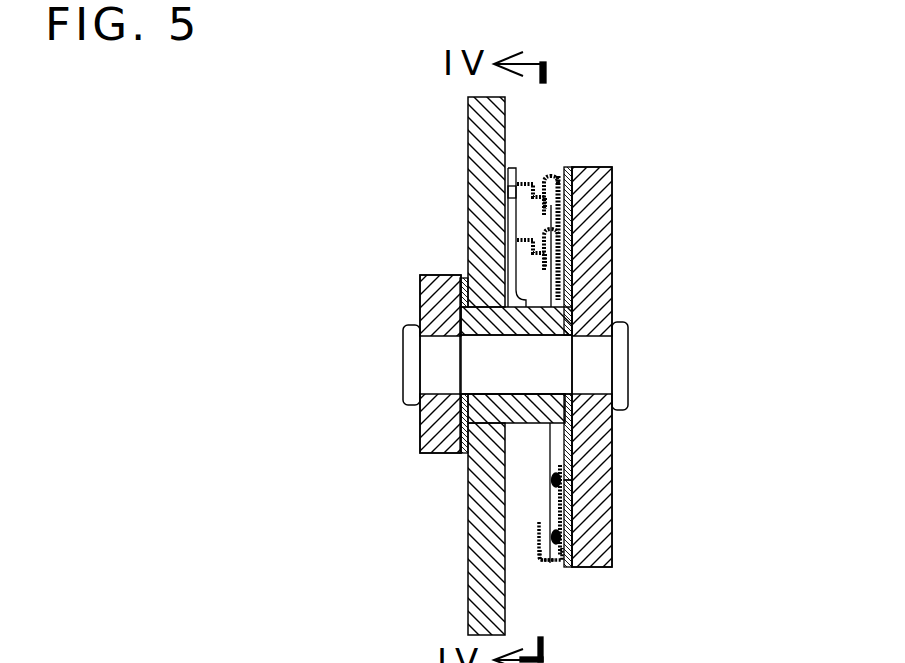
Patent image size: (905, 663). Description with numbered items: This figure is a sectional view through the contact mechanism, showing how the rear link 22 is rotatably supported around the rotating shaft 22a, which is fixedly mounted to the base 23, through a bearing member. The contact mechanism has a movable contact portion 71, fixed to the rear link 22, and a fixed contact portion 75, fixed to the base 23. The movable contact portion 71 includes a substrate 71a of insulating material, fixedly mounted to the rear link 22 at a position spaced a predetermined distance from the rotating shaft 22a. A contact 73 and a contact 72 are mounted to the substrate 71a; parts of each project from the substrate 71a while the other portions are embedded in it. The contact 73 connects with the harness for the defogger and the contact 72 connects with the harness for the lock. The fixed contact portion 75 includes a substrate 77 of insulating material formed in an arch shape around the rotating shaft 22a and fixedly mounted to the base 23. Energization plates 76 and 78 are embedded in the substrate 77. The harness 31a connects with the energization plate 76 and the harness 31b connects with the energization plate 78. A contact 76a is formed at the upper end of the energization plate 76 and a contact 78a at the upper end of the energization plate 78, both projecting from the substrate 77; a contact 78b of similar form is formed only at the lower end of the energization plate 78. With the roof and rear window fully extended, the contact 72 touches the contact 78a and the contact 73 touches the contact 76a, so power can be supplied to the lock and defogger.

The rear link 22 is at (478, 562).
The rotating shaft 22a is at (553, 368).
The base 23 is at (431, 453).
The harness 31a is at (555, 462).
The harness 31b is at (555, 505).
The movable contact portion 71 is at (520, 169).
The substrate 71a is at (513, 192).
The contact 72 is at (532, 228).
The contact 73 is at (510, 287).
The fixed contact portion 75 is at (548, 169).
The energization plate 76 is at (556, 478).
The contact 76a is at (566, 255).
The substrate 77 is at (560, 217).
The energization plate 78 is at (570, 550).
The contact 78a is at (567, 191).
The contact 78b is at (540, 561).